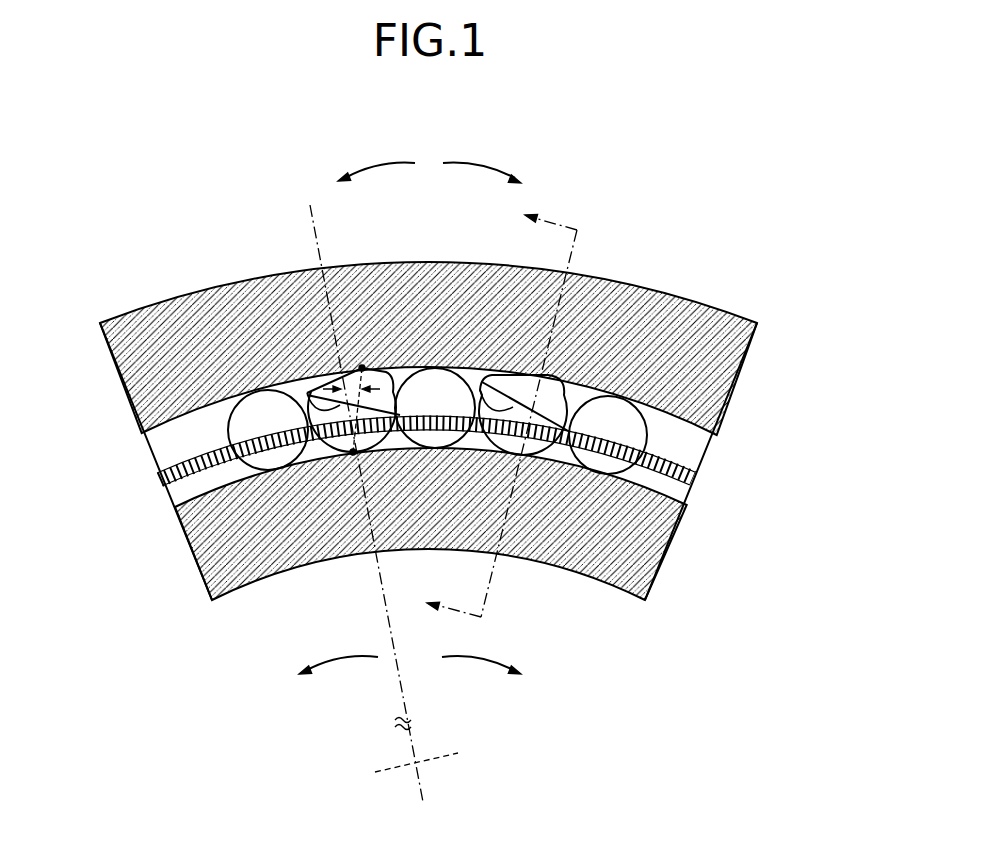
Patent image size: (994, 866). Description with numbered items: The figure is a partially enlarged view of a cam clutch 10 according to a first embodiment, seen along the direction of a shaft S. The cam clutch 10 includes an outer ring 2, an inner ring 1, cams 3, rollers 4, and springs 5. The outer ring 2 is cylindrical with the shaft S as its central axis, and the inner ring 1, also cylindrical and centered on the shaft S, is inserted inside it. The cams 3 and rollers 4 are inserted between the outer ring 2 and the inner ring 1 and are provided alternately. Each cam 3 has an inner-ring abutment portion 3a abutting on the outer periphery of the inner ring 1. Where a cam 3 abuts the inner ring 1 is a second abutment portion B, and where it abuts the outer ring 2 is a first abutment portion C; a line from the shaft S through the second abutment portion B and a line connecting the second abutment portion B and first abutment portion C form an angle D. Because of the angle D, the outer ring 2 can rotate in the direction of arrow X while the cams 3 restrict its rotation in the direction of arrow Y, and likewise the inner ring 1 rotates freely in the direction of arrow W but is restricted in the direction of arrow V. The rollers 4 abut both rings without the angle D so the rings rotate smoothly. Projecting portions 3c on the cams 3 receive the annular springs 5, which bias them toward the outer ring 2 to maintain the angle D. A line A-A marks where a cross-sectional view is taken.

The inner ring 1 is at (263, 562).
The outer ring 2 is at (173, 317).
The cam 3 is at (390, 372).
The inner-ring abutment portion 3a is at (340, 445).
The projecting portion 3c is at (305, 388).
The roller 4 is at (260, 407).
The spring 5 is at (652, 462).
The cam clutch 10 is at (680, 196).
The line A- A is at (502, 417).
The second abutment portion B is at (354, 456).
The first abutment portion C is at (358, 372).
The angle D is at (361, 366).
The shaft S is at (413, 763).
The arrow V is at (473, 665).
The arrow W is at (340, 665).
The arrow X is at (477, 166).
The arrow Y is at (380, 166).